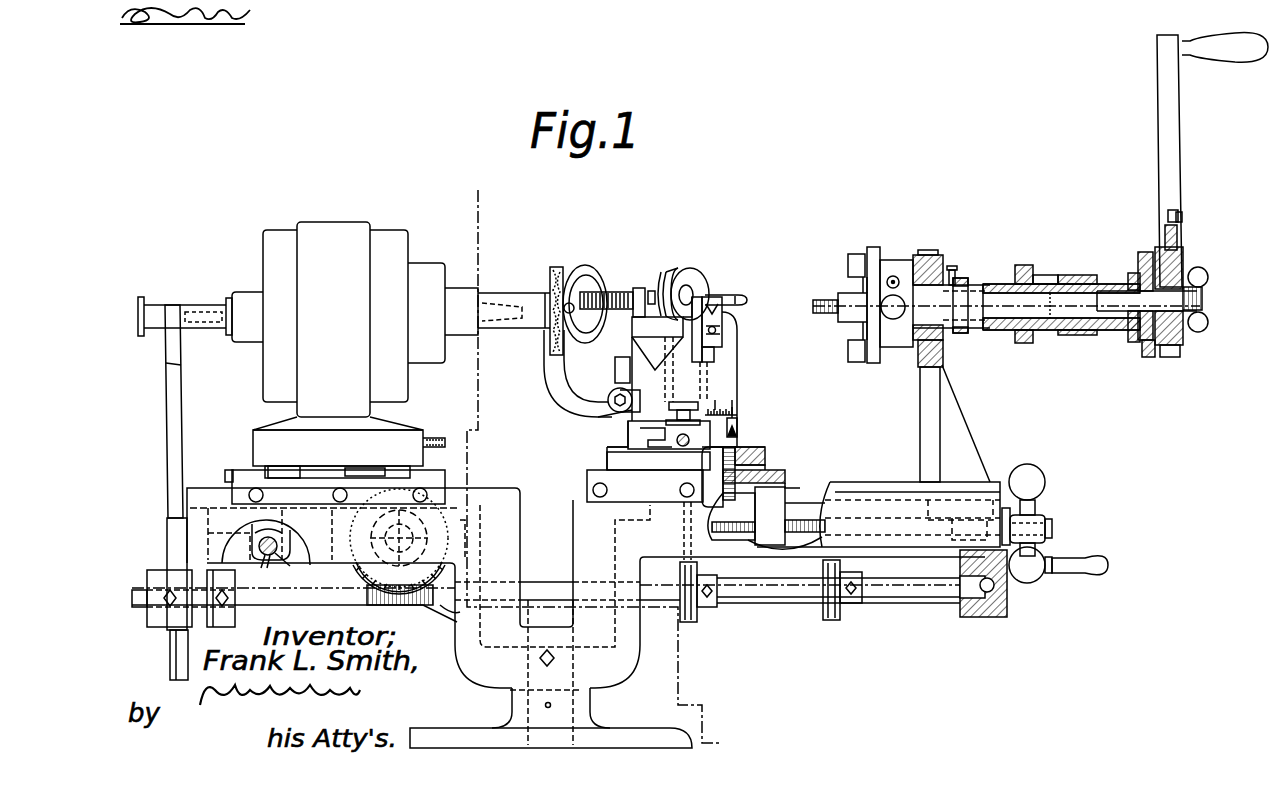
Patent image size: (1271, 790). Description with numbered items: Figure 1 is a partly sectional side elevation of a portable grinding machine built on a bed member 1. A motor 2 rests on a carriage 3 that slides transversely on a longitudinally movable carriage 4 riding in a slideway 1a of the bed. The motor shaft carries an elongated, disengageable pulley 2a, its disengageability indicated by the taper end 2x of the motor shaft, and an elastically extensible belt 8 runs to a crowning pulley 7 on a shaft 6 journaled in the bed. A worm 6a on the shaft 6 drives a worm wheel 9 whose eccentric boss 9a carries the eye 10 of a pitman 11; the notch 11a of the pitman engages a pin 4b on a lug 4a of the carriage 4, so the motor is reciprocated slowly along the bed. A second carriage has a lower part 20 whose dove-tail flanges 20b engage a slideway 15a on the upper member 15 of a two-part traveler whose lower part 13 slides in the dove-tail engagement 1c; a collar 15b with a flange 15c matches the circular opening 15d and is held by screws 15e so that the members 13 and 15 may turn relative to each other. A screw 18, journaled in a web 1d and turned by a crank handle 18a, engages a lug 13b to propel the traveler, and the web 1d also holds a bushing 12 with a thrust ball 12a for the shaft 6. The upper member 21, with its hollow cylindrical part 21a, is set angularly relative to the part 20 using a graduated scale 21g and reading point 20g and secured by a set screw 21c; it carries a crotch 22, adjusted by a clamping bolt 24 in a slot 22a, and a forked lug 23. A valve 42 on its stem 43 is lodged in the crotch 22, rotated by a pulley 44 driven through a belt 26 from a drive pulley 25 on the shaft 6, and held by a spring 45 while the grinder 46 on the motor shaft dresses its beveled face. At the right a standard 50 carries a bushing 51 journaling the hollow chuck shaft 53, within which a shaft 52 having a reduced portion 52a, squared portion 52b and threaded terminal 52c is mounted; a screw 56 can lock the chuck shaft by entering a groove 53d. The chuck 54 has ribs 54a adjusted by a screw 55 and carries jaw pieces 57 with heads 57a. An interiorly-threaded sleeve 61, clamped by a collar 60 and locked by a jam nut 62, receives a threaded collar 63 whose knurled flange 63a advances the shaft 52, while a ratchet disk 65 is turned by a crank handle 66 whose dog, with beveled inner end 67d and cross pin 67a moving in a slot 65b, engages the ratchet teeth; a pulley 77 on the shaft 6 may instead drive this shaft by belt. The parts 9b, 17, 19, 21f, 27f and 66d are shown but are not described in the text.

The bed member 1 is at (620, 662).
The slideway 1a is at (478, 492).
The dove-tail slideway 1c is at (875, 486).
The web 1d is at (980, 550).
The motor 2 is at (338, 314).
The pulley 2a is at (152, 315).
The taper end of the motor shaft 2x is at (205, 324).
The carriage 3 is at (329, 454).
The longitudinally movable carriage 4 is at (283, 480).
The lug 4a is at (256, 537).
The pin 4b is at (263, 568).
The shaft 6 is at (140, 590).
The worm 6a is at (459, 619).
The pulley 7 is at (170, 530).
The belt 8 is at (181, 430).
The worm wheel 9 is at (456, 567).
The eccentric boss 9a is at (458, 542).
The slide plate 9b is at (385, 502).
The eye 10 is at (399, 547).
The pitman 11 is at (293, 545).
The notch 11a is at (285, 560).
The bushing 12 is at (1007, 600).
The thrust ball 12a is at (995, 586).
The lower part of traveler 13 is at (590, 480).
The lug 13b is at (771, 545).
The upper member of traveler 15 is at (790, 430).
The dove-tail slideway 15a is at (622, 455).
The sleeve or collar 15b is at (765, 462).
The flange 15c is at (731, 516).
The circular opening 15d is at (718, 477).
The screws 15e is at (690, 508).
The spindle cap 17 is at (670, 411).
The screw 18 is at (812, 528).
The crank handle 18a is at (1040, 512).
The section line 19 is at (478, 190).
The lower part of second carriage 20 is at (628, 432).
The dove-tail flanges 20b is at (620, 440).
The reading point 20g is at (740, 428).
The upper member of second carriage 21 is at (632, 345).
The hollow cylindrical part 21a is at (620, 407).
The set screw 21c is at (614, 393).
The bracket arm 21f is at (545, 386).
The graduated scale 21g is at (740, 412).
The crotch 22 is at (722, 300).
The slot 22a is at (740, 350).
The forked lug 23 is at (641, 288).
The clamping bolt 24 is at (724, 331).
The drive pulley 25 is at (683, 608).
The drive belt 26 is at (695, 622).
The slot 27f is at (675, 448).
The valve 42 is at (588, 266).
The stem 43 is at (745, 297).
The pulley 44 is at (698, 272).
The spring 45 is at (610, 290).
The grinder 46 is at (550, 277).
The standard 50 is at (922, 408).
The bushing 51 is at (957, 333).
The shaft 52 is at (1000, 330).
The reduced portion 52a is at (998, 301).
The squared portion 52b is at (1203, 298).
The threaded terminal 52c is at (825, 299).
The chuck shaft 53 is at (988, 284).
The groove 53d is at (1006, 306).
The chuck 54 is at (876, 365).
The rib 54a is at (893, 320).
The screw 55 is at (893, 276).
The screw 56 is at (954, 268).
The jaw pieces 57 is at (838, 317).
The heads 57a is at (857, 254).
The collar 60 is at (1030, 343).
The interiorly-threaded sleeve 61 is at (1072, 275).
The jam nut 62 is at (1142, 350).
The exteriorly-threaded collar 63 is at (1132, 343).
The knurled flange 63a is at (1145, 252).
The ratchet disk 65 is at (1168, 357).
The slot 65b is at (1170, 210).
The crank handle 66 is at (1158, 132).
The knob 66d is at (1202, 270).
The cross pin 67a is at (1182, 217).
The inner end of the dog 67d is at (1165, 212).
The pulley 77 is at (831, 622).